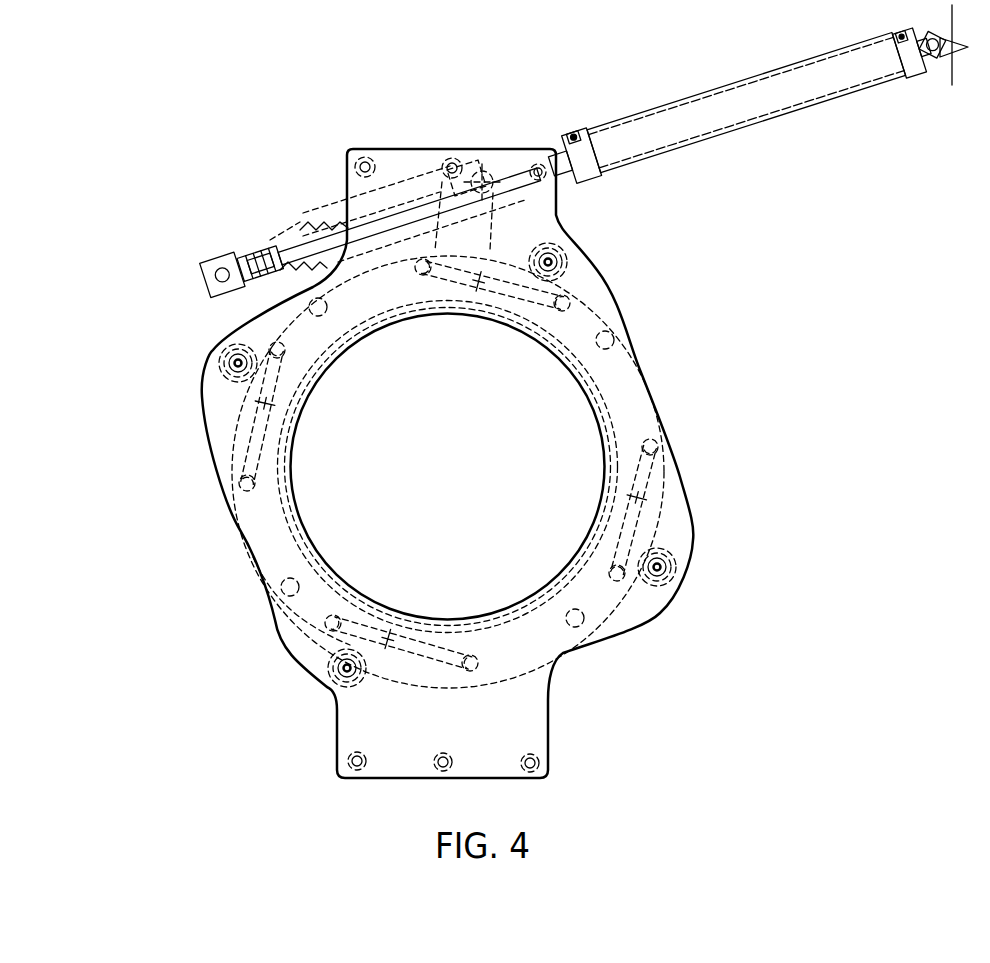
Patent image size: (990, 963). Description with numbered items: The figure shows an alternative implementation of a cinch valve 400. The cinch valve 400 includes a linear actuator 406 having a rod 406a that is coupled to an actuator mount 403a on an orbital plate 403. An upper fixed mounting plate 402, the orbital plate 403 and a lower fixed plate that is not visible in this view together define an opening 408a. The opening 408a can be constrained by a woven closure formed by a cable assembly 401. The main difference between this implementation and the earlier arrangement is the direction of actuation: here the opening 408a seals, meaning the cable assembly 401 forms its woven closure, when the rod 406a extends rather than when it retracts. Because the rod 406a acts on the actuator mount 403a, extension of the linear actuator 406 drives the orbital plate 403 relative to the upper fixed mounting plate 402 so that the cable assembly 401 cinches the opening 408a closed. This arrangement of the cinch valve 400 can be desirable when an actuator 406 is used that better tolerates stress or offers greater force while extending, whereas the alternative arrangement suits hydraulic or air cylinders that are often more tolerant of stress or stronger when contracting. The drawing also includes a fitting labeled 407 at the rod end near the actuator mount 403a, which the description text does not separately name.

The cinch valve 400 is at (171, 97).
The cable assembly 401 is at (600, 400).
The upper fixed mounting plate 402 is at (530, 717).
The orbital plate 403 is at (240, 305).
The actuator mount 403a is at (197, 291).
The linear actuator 406 is at (728, 140).
The rod 406a is at (293, 243).
The rod end fitting 407 is at (241, 254).
The opening 408a is at (483, 477).